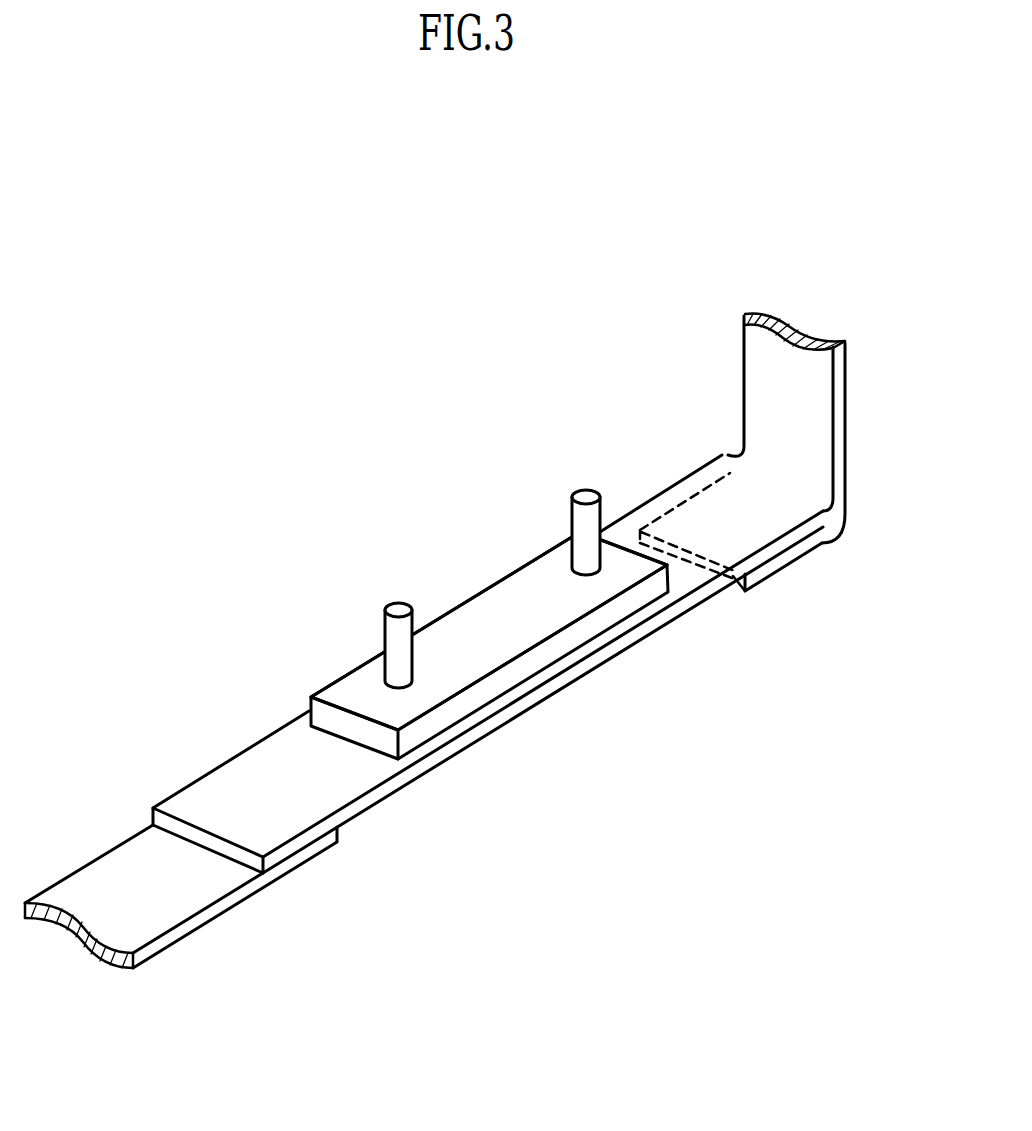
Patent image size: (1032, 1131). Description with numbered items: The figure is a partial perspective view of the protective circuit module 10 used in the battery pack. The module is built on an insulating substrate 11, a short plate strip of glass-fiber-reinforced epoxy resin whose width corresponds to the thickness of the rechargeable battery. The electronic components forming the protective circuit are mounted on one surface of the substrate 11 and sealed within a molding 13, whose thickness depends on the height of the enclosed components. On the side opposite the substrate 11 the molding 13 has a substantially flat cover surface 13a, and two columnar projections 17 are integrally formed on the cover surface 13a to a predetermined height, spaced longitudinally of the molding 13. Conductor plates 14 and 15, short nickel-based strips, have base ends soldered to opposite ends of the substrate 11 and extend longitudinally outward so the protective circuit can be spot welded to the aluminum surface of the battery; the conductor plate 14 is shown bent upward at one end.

The protective circuit module 10 is at (508, 541).
The insulating substrate 11 is at (383, 799).
The molding 13 is at (513, 631).
The cover surface 13a is at (462, 665).
The conductor plate 14 is at (847, 478).
The conductor plate 15 is at (216, 920).
The projection 17 is at (393, 632).